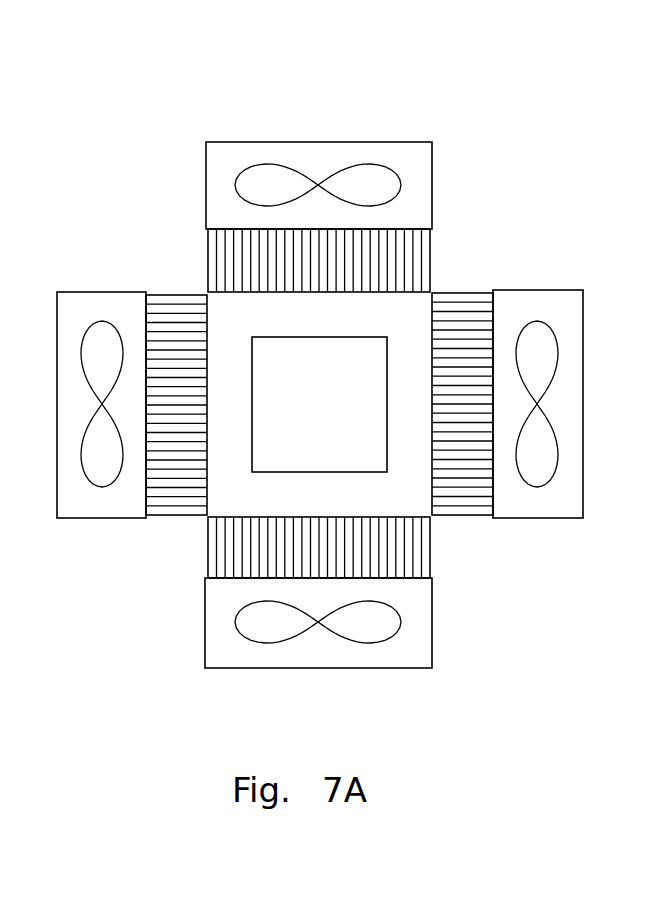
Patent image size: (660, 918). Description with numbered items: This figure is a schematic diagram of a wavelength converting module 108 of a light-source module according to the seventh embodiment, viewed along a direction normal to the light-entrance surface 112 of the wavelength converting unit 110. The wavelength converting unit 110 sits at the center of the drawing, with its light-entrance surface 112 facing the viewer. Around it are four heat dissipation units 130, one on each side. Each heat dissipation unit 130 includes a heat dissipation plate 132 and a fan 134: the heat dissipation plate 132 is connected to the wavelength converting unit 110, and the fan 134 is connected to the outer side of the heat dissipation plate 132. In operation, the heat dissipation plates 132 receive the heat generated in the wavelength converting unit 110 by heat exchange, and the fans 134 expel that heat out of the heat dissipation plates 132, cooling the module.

The wavelength converting module 108 is at (98, 64).
The wavelength converting unit 110 is at (252, 462).
The light-entrance surface 112 is at (330, 447).
The heat dissipation unit 130 is at (183, 195).
The heat dissipation plate 132 is at (172, 297).
The fan 134 is at (83, 290).